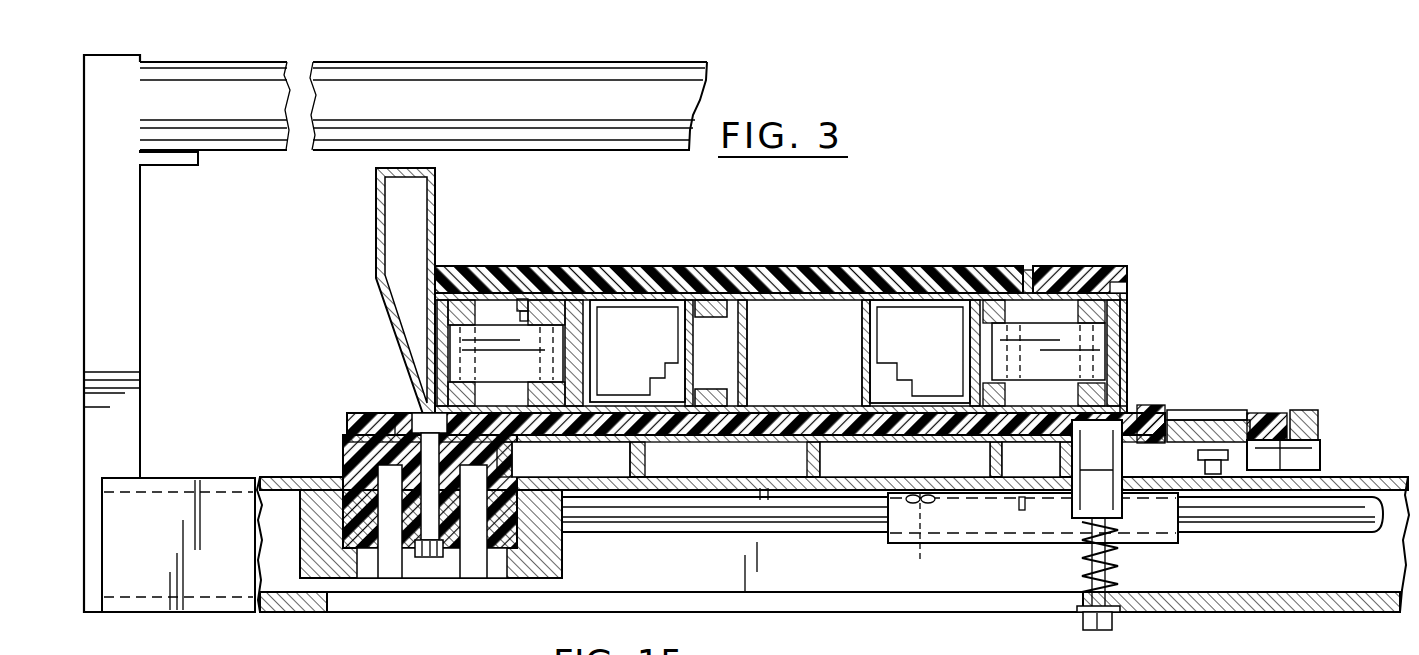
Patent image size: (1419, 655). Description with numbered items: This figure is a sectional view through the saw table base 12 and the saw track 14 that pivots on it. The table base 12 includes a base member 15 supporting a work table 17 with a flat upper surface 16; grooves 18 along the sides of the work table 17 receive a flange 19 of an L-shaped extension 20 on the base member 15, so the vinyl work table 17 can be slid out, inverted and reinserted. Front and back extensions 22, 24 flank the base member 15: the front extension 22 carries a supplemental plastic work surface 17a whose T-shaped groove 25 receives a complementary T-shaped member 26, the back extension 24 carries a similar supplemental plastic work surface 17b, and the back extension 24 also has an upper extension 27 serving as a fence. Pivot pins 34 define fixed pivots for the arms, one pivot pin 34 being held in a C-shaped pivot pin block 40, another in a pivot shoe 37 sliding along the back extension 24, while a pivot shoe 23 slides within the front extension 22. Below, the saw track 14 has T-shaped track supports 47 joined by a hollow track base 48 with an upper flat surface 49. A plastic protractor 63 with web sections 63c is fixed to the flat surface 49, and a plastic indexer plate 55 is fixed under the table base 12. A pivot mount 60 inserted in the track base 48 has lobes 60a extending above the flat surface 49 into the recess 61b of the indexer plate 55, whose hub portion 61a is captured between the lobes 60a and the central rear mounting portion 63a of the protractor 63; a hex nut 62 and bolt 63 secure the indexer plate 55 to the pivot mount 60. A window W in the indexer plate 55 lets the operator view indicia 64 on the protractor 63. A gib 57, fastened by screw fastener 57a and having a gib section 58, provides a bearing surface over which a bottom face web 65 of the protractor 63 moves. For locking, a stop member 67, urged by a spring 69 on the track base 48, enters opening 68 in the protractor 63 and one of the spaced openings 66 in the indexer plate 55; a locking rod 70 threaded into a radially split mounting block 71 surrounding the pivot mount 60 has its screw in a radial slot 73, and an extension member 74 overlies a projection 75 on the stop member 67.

The table base 12 is at (1147, 270).
The saw track 14 is at (712, 87).
The base member 15 is at (783, 403).
The flat upper surface 16 is at (795, 268).
The work table 17 is at (878, 270).
The supplemental plastic work surface 17a is at (1060, 268).
The supplemental plastic work surface 17b is at (457, 267).
The grooves 18 is at (535, 294).
The flange 19 is at (524, 292).
The L-shaped extension 20 is at (520, 290).
The front extension 22 is at (1108, 328).
The pivot shoe 23 is at (1112, 345).
The back extension 24 is at (453, 333).
The T-shaped groove 25 is at (1093, 270).
The T-shaped member 26 is at (1128, 287).
The upper extension 27 is at (382, 205).
The pivot pin 34 is at (540, 368).
The pivot shoe 37 is at (443, 348).
The pivot pin block 40 is at (600, 328).
The track support 47 is at (145, 270).
The track base 48 is at (193, 613).
The upper flat surface 49 is at (223, 477).
The indexer plate 55 is at (855, 422).
The gib 57 is at (1320, 447).
The screw fastener 57a is at (1297, 413).
The pin 58 is at (1213, 463).
The pivot mount 60 is at (380, 553).
The upper lobes 60a is at (347, 452).
The hub portion 61a is at (502, 455).
The recess 61b is at (393, 417).
The hex nut 62 is at (422, 412).
The protractor 63 is at (423, 567).
The central rear mounting portion 63a is at (347, 467).
The web sections 63c is at (807, 458).
The indicia 64 is at (1223, 420).
The bottom face web 65 is at (1221, 465).
The spaced openings 66 is at (1150, 407).
The stop member 67 is at (1073, 568).
The opening 68 is at (1137, 453).
The spring 69 is at (1077, 590).
The locking rod 70 is at (1333, 522).
The mounting block 71 is at (563, 558).
The radial slot 73 is at (923, 543).
The extension member 74 is at (906, 500).
The projection 75 is at (1045, 505).
The window W is at (1210, 413).